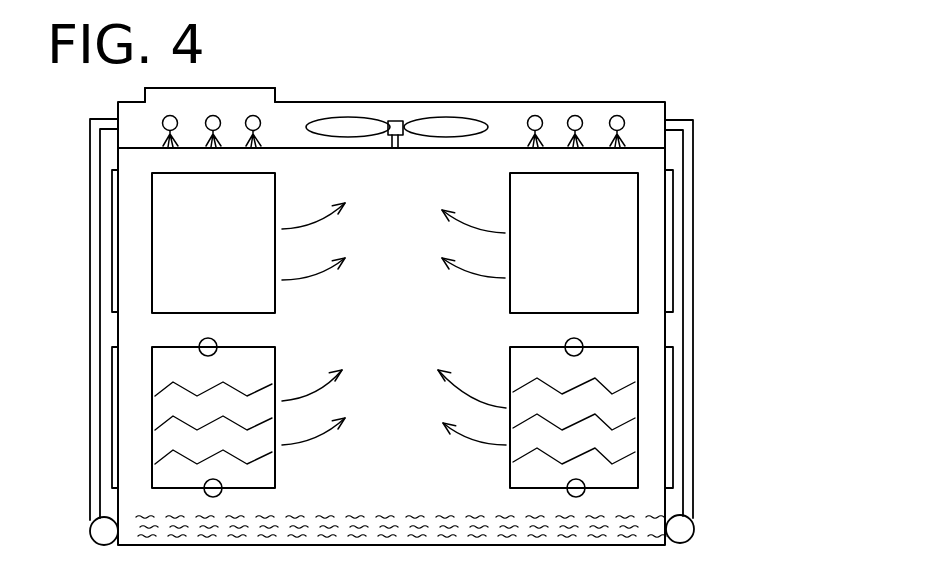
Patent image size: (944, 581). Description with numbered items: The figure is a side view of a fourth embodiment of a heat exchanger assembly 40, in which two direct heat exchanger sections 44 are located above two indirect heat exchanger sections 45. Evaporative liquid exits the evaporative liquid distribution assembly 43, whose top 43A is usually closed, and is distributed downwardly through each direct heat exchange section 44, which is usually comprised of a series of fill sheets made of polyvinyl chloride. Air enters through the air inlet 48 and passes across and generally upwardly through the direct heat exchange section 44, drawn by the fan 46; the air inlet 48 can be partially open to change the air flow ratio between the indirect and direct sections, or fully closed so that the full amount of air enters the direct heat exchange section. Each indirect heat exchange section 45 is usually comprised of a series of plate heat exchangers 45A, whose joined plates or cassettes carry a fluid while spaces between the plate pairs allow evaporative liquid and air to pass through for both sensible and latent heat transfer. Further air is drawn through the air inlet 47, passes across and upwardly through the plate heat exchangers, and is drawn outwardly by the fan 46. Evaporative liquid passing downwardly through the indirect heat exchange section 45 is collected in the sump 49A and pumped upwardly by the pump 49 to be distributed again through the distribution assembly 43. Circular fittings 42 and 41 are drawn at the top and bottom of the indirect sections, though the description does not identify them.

The heat exchanger assembly 40 is at (712, 190).
The lower pipe valve 41 is at (223, 494).
The upper pipe valve 42 is at (216, 343).
The evaporative liquid distribution assembly 43 is at (255, 114).
The top of the evaporative liquid distribution assembly 43A is at (228, 88).
The direct heat exchanger section 44 is at (276, 260).
The indirect heat exchanger section 45 is at (278, 367).
The plate heat exchanger 45A is at (527, 380).
The fan 46 is at (443, 117).
The air inlet 47 is at (110, 410).
The air inlet 48 is at (112, 245).
The pump 49 is at (692, 523).
The sump 49A is at (422, 510).